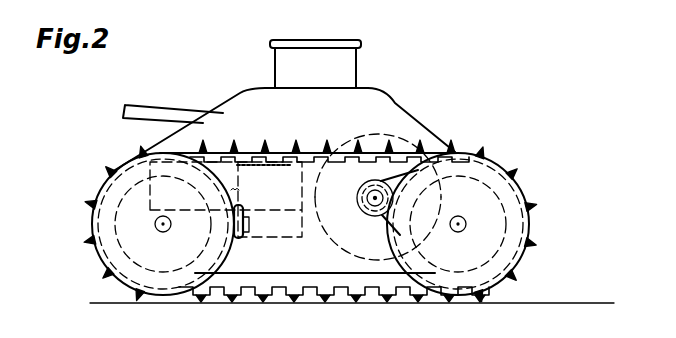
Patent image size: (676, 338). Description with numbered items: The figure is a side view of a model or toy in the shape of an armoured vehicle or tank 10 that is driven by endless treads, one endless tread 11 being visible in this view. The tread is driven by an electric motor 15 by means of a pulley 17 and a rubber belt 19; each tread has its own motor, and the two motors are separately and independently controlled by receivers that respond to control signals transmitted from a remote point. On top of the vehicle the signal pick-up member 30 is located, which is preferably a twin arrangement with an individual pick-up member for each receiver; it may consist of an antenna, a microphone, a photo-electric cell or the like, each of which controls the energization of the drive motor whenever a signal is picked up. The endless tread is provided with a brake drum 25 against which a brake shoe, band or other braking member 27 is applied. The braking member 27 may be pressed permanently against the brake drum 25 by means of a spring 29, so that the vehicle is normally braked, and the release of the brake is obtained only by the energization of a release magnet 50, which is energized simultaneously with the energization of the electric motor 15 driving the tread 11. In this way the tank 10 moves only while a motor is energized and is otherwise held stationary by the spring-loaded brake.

The tank 10 is at (528, 187).
The endless tread 11 is at (283, 294).
The electric motor 15 is at (338, 240).
The pulley 17 is at (366, 204).
The rubber belt 19 is at (389, 230).
The brake drum 25 is at (221, 268).
The braking member 27 is at (238, 238).
The spring 29 is at (253, 166).
The signal pick-up member 30 is at (349, 63).
The release magnet 50 is at (283, 213).